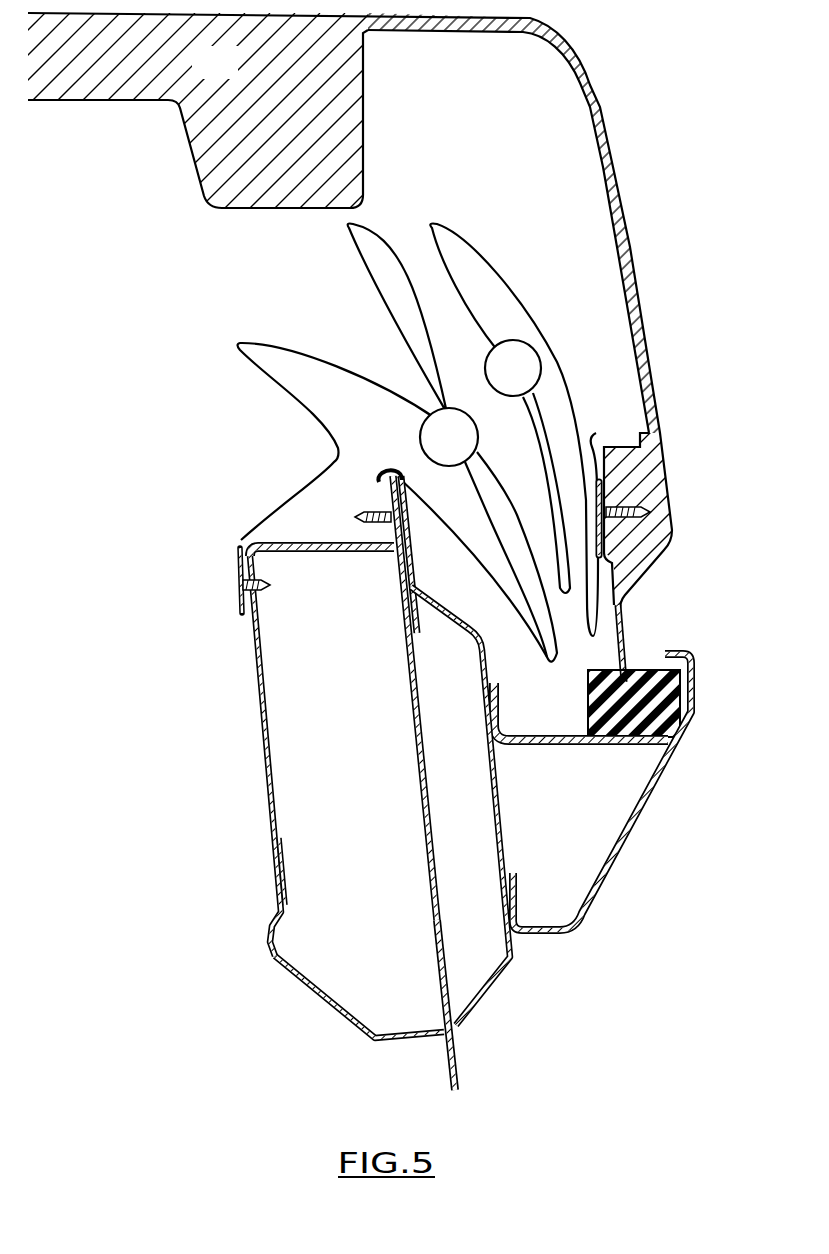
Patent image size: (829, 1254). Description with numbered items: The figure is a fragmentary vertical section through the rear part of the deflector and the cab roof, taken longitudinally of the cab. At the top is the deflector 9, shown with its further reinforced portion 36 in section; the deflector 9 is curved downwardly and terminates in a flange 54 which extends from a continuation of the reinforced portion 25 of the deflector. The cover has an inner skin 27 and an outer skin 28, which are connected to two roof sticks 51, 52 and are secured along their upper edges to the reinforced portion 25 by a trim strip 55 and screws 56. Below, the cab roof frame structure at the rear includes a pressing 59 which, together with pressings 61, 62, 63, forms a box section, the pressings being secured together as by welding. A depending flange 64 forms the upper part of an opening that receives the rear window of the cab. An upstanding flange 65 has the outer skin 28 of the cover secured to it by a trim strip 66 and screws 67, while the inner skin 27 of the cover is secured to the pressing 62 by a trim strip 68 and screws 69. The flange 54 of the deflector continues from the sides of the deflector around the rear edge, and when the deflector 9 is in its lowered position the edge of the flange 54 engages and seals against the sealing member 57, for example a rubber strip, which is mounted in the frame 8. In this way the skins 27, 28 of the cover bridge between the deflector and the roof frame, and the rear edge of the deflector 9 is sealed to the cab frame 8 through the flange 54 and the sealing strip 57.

The reinforced portion 36 is at (236, 76).
The deflector 9 is at (633, 295).
The reinforced portion of the deflector 25 is at (655, 548).
The flange 54 is at (619, 643).
The inner skin 27 is at (300, 355).
The outer skin 28 is at (518, 620).
The trim strip 55 is at (587, 452).
The roof stick 51 is at (528, 384).
The roof stick 52 is at (464, 453).
The screws 56 is at (604, 512).
The sealing member 57 is at (650, 690).
The frame 8 is at (646, 806).
The pressing 63 is at (316, 553).
The pressing 62 is at (251, 711).
The pressing 61 is at (295, 978).
The depending flange 64 is at (460, 1075).
The trim strip 66 is at (408, 543).
The screws 67 is at (408, 517).
The pressing 59 is at (493, 987).
The trim strip 68 is at (241, 610).
The upstanding flange 65 is at (389, 502).
The screws 69 is at (242, 585).